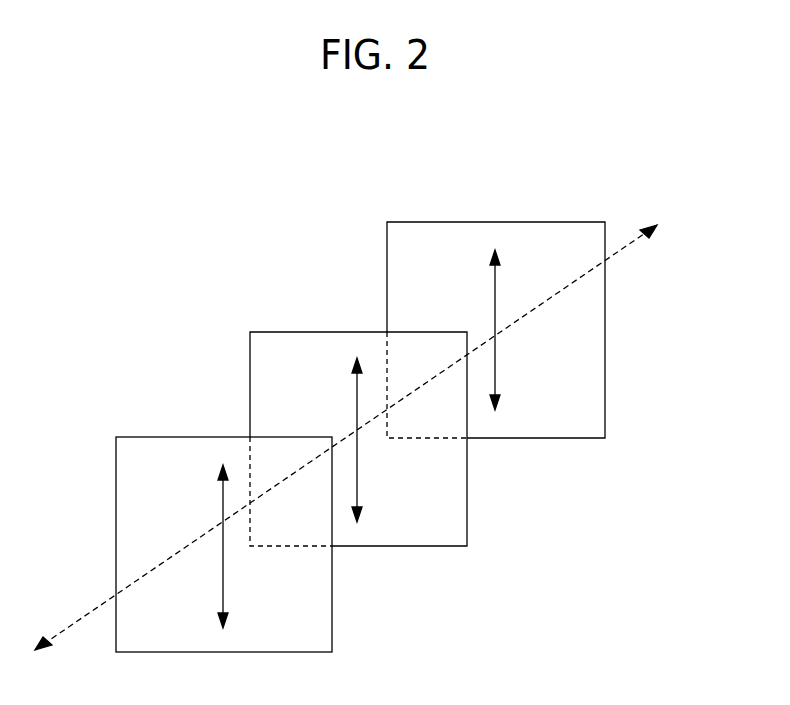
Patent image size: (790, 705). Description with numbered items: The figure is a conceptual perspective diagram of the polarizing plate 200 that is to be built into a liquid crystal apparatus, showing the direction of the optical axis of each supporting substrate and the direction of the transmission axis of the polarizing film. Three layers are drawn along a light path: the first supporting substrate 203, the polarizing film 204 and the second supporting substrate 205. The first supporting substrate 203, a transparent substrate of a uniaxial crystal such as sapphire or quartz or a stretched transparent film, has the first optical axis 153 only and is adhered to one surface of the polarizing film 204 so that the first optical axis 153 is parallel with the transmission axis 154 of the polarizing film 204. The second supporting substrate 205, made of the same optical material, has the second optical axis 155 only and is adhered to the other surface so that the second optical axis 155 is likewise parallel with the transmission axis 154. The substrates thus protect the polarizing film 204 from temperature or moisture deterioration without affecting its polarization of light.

The polarizing plate 200 is at (219, 200).
The first supporting substrate 203 is at (145, 438).
The polarizing film 204 is at (277, 332).
The second supporting substrate 205 is at (413, 222).
The first optical axis 153 is at (223, 573).
The transmission axis 154 is at (357, 463).
The second optical axis 155 is at (495, 350).